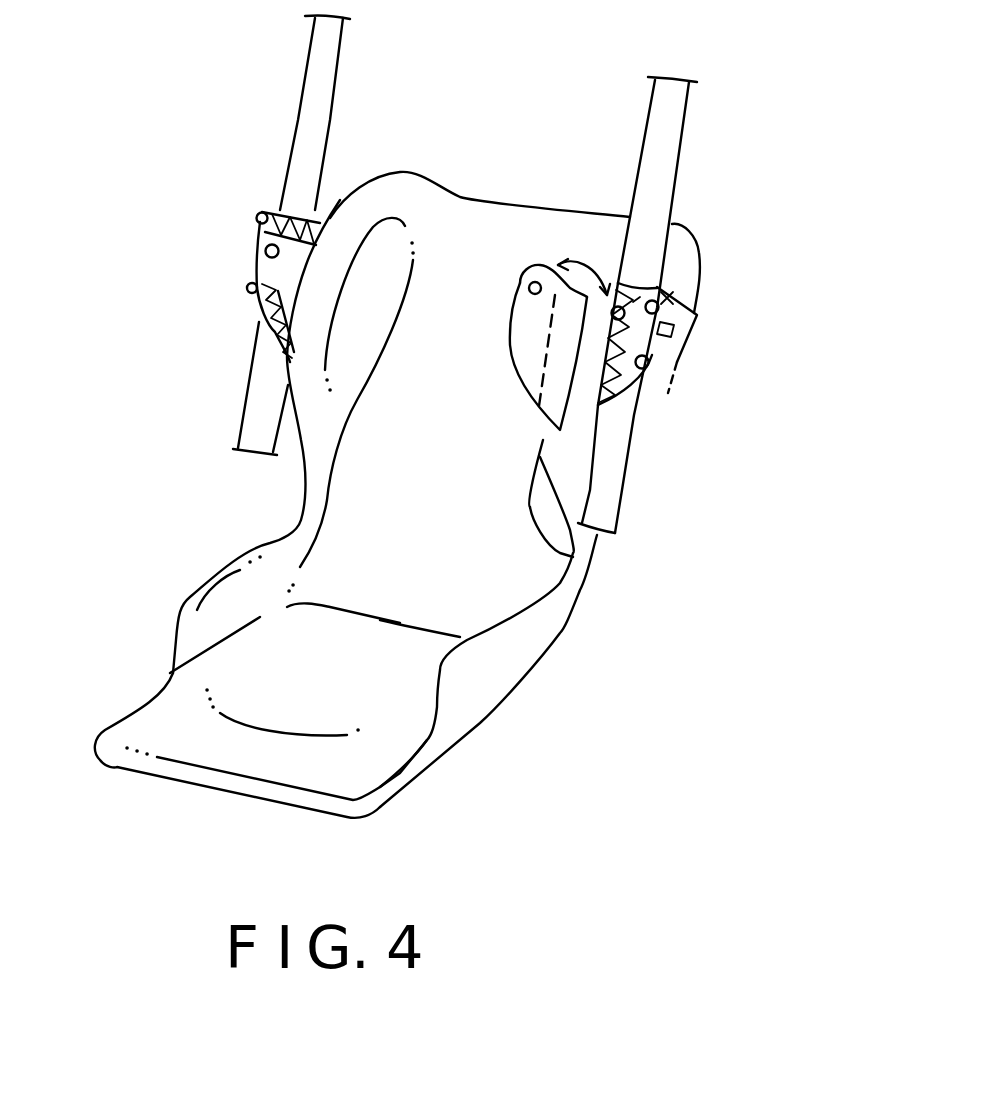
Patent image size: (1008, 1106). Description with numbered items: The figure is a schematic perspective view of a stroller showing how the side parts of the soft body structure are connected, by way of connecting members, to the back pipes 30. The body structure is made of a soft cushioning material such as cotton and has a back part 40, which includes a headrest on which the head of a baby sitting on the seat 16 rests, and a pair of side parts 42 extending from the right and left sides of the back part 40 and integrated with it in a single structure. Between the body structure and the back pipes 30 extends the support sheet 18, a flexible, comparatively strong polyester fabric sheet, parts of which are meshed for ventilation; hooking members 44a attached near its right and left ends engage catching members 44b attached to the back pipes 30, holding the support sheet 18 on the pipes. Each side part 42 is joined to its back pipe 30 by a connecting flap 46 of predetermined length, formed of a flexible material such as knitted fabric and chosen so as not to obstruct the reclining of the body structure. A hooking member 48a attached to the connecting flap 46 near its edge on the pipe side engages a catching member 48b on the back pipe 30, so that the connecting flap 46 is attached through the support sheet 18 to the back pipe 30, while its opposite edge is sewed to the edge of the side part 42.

The seat 16 is at (160, 703).
The support sheet 18 is at (683, 366).
The back pipe 30 is at (258, 415).
The back part 40 is at (474, 206).
The side part 42 is at (377, 200).
The hooking member 44a is at (471, 266).
The catching member 44b is at (262, 215).
The connecting flap 46 is at (280, 292).
The hooking member 48a is at (265, 251).
The catching member 48b is at (610, 310).